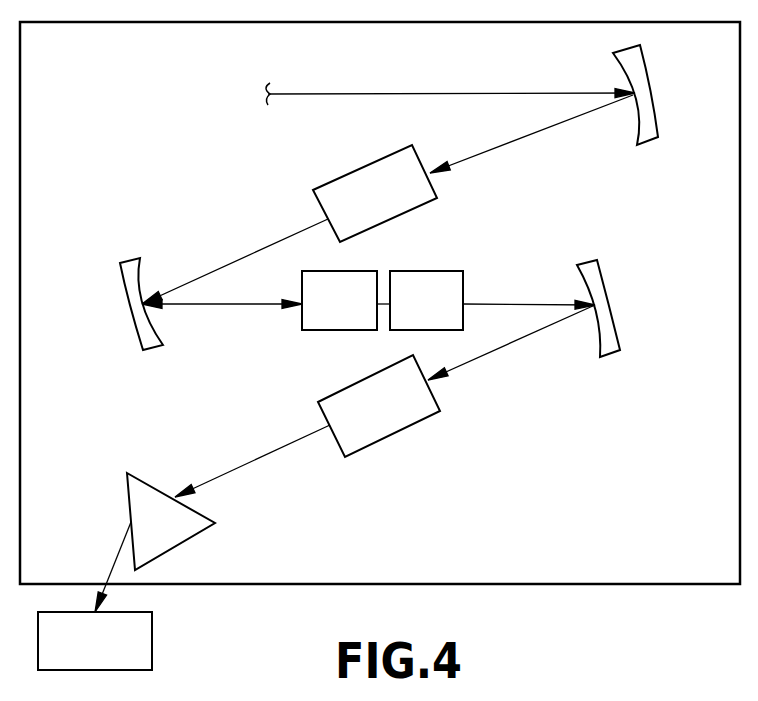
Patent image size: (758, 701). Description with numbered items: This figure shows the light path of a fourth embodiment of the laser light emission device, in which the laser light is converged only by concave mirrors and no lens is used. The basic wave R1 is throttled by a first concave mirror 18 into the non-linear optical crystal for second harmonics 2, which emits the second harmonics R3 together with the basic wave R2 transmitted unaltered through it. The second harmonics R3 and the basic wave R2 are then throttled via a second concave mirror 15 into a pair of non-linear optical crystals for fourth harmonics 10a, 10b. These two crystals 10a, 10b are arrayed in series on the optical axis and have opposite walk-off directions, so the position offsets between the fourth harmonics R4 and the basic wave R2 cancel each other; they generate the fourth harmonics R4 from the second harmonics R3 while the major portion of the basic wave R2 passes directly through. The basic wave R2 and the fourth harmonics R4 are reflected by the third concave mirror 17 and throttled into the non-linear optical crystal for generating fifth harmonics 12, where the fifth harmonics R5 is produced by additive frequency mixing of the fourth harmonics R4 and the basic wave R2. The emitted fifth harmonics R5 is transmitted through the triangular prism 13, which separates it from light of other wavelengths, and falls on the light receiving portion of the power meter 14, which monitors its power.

The non-linear optical crystal for second harmonics 2 is at (418, 200).
The non-linear optical crystal for fourth harmonics 10a is at (332, 320).
The non-linear optical crystal for fourth harmonics 10b is at (412, 320).
The non-linear optical crystal for generating fifth harmonics 12 is at (392, 425).
The triangular prism 13 is at (200, 530).
The power meter 14 is at (152, 640).
The second concave mirror 15 is at (142, 333).
The third concave mirror 17 is at (597, 280).
The first concave mirror 18 is at (637, 62).
The basic wave R1 is at (498, 93).
The basic wave R2 is at (498, 272).
The second harmonics R3 is at (252, 248).
The fourth harmonics R4 is at (538, 305).
The fifth harmonics R5 is at (107, 572).